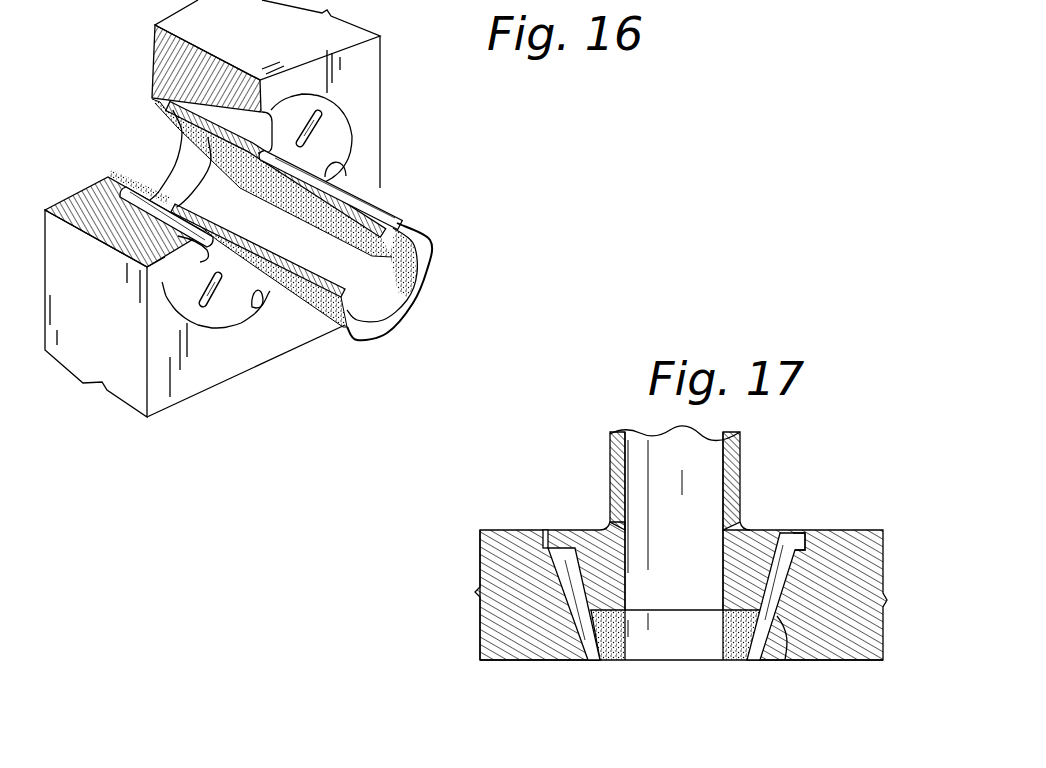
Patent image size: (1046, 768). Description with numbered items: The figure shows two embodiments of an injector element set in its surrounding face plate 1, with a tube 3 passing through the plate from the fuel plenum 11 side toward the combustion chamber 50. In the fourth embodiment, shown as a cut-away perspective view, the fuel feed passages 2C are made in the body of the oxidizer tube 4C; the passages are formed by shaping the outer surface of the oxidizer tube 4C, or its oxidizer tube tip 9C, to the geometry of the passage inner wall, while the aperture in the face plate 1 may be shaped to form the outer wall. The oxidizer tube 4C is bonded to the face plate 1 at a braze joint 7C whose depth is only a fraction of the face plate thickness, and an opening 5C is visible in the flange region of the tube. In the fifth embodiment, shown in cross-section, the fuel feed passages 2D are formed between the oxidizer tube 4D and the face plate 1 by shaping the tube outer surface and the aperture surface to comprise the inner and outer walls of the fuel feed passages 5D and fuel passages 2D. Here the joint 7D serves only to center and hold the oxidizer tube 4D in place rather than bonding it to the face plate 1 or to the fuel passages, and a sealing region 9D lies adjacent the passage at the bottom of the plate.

In FIG. 16, the face plate 1 is at (124, 403).
In FIG. 17, the face plate 1 is at (513, 660).
In FIG. 16, the tube 3 is at (391, 303).
In FIG. 17, the tube 3 is at (681, 496).
In FIG. 16, the fuel plenum 11 is at (376, 407).
In FIG. 17, the fuel plenum 11 is at (567, 446).
In FIG. 16, the combustion chamber 50 is at (113, 41).
In FIG. 17, the combustion chamber 50 is at (711, 753).
In FIG. 16, the fuel feed passages 2C is at (163, 192).
In FIG. 16, the oxidizer tube 4C is at (233, 299).
In FIG. 16, the slot 5C is at (338, 134).
In FIG. 16, the braze joint 7C is at (350, 107).
In FIG. 16, the oxidizer tube tip 9C is at (173, 113).
In FIG. 17, the fuel feed passages 2D is at (785, 660).
In FIG. 17, the oxidizer tube 4D is at (770, 533).
In FIG. 17, the fuel feed passages 5D is at (797, 533).
In FIG. 17, the joint 7D is at (545, 530).
In FIG. 17, the sealant 9D is at (612, 660).